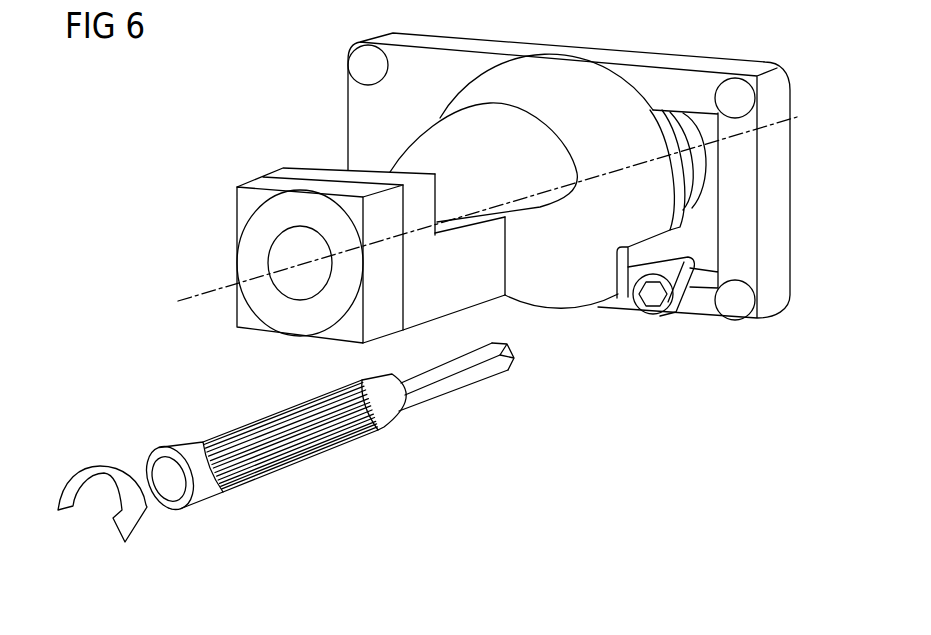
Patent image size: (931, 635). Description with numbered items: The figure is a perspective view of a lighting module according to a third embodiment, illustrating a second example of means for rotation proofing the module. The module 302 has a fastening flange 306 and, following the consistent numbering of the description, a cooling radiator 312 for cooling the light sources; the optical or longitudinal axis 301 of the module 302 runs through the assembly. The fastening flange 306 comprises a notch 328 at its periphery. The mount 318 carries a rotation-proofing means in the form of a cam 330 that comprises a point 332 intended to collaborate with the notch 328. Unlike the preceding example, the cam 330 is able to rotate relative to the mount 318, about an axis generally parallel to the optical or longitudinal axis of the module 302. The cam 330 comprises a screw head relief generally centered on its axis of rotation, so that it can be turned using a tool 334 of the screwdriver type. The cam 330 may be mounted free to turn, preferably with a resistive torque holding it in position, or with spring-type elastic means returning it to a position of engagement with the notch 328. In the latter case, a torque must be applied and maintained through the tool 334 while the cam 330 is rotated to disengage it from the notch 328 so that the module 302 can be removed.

The central axis 301 is at (187, 302).
The module 302 is at (297, 147).
The fastening flange 306 is at (553, 66).
The cooling radiator 312 is at (282, 255).
The mount 318 is at (683, 82).
The notch 328 is at (637, 250).
The cam 330 is at (683, 322).
The point 332 is at (692, 264).
The tool 334 is at (412, 433).